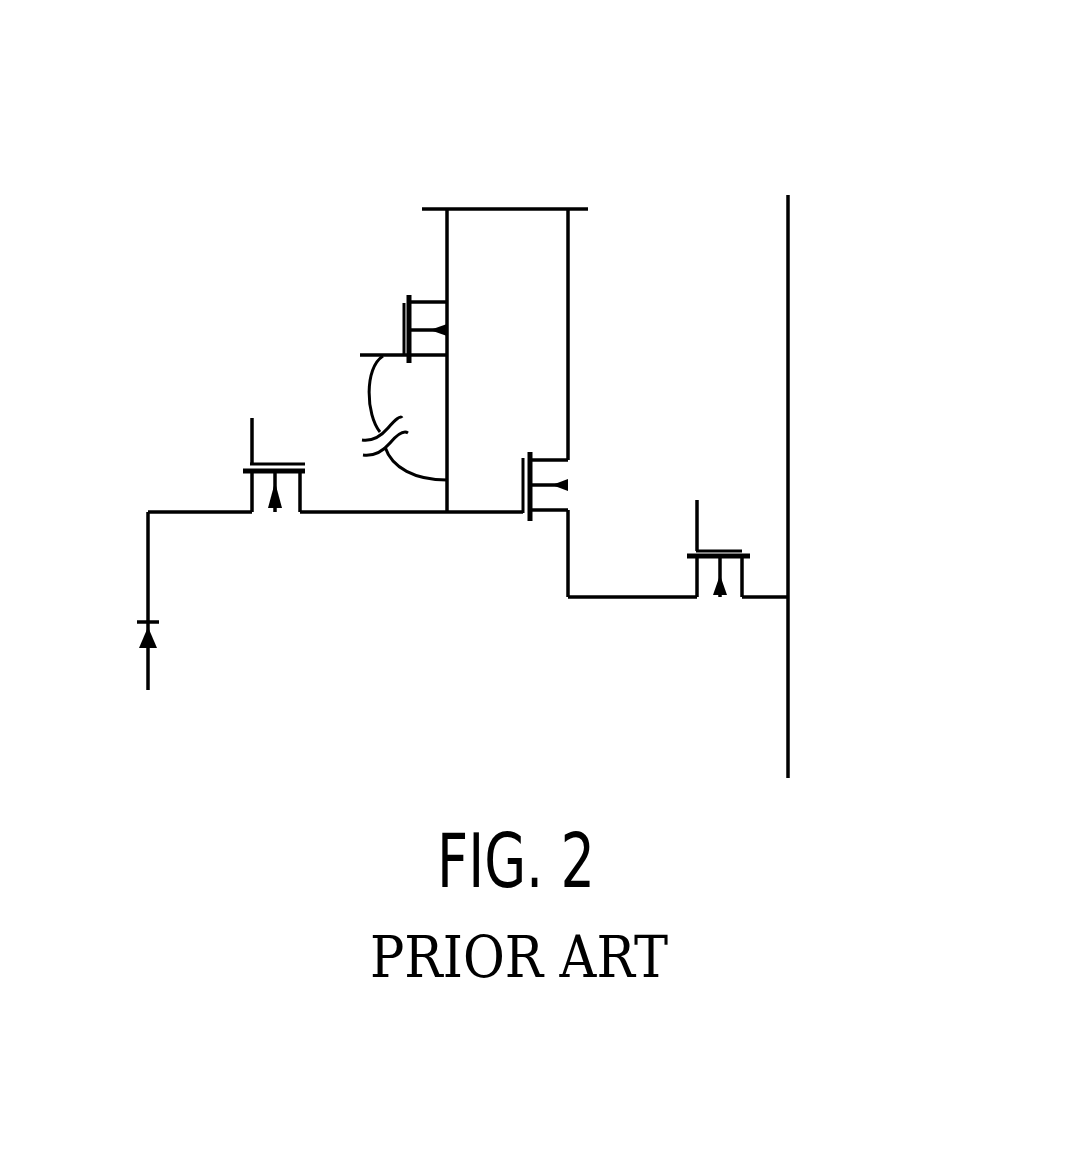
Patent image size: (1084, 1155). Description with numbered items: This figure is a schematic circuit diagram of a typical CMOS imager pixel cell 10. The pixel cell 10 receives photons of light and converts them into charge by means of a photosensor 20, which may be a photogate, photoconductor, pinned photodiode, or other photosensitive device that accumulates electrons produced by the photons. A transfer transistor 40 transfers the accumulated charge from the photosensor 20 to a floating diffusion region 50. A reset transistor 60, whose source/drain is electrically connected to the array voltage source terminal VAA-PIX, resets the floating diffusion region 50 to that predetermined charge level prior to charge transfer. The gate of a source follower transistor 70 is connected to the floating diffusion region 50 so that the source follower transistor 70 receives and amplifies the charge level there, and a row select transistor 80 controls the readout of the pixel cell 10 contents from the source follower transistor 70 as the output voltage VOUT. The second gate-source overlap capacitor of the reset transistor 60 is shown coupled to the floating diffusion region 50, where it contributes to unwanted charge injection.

The pixel cell 10 is at (857, 73).
The photosensor 20 is at (114, 642).
The transfer transistor 40 is at (226, 469).
The floating diffusion region 50 is at (443, 532).
The reset transistor 60 is at (393, 285).
The source follower transistor 70 is at (590, 435).
The row select transistor 80 is at (690, 613).